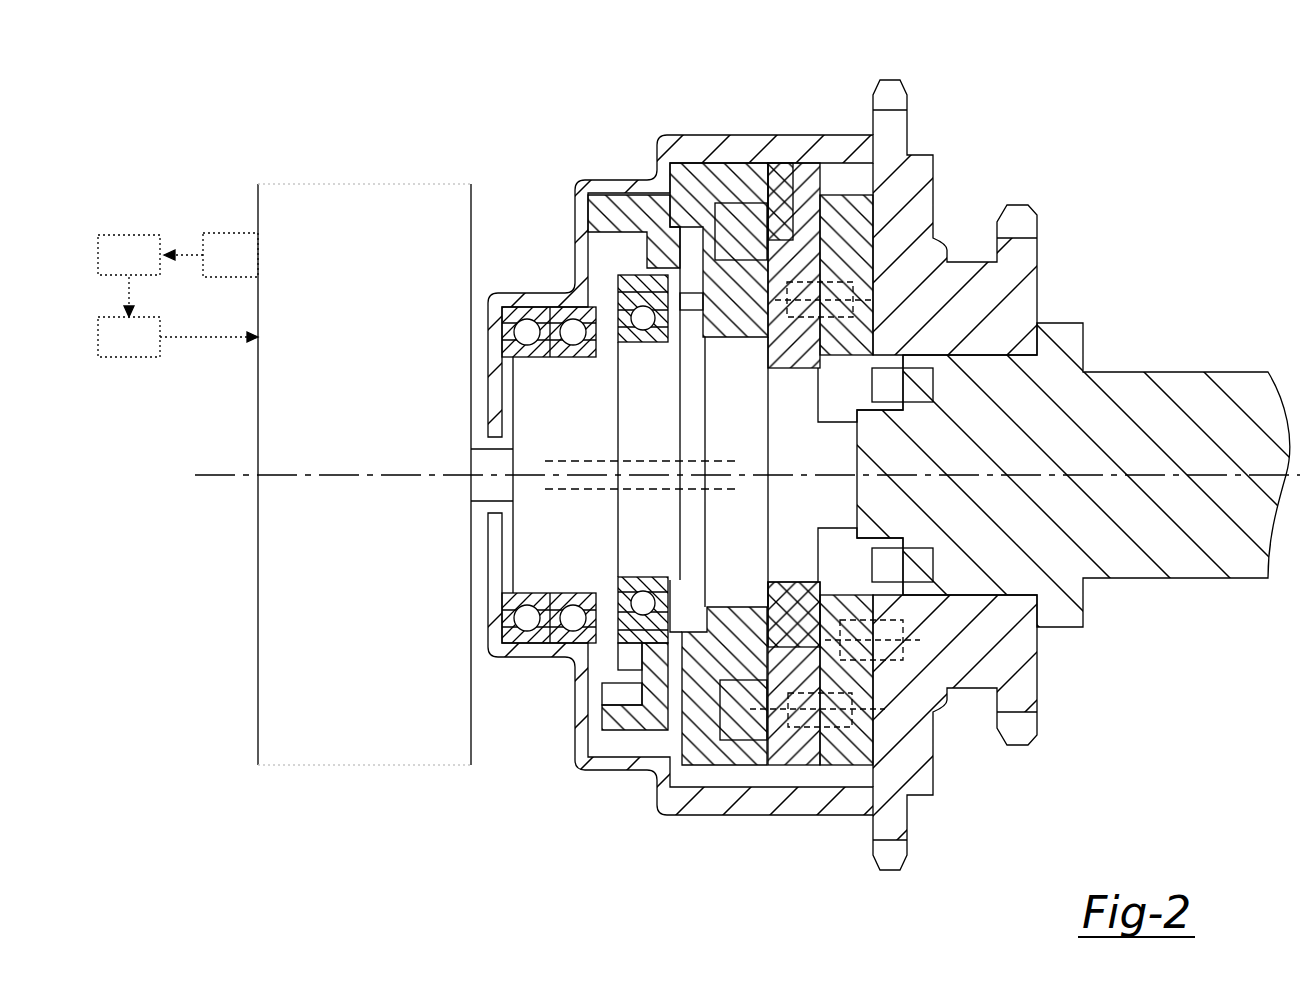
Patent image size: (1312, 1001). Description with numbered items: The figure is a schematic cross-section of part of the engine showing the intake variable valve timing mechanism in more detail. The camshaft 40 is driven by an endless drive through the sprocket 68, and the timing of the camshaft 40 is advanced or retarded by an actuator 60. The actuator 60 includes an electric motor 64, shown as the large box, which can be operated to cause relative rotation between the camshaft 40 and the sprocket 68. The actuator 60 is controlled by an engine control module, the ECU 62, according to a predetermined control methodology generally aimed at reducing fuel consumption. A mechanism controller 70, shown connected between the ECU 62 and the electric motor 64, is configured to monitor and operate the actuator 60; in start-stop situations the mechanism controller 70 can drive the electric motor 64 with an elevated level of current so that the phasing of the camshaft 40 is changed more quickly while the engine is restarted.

The camshaft 40 is at (1247, 372).
The actuator 60 is at (458, 800).
The engine control module (ECU) 62 is at (123, 235).
The electric motor 64 is at (268, 647).
The sprocket 68 is at (885, 135).
The mechanism controller 70 is at (127, 358).